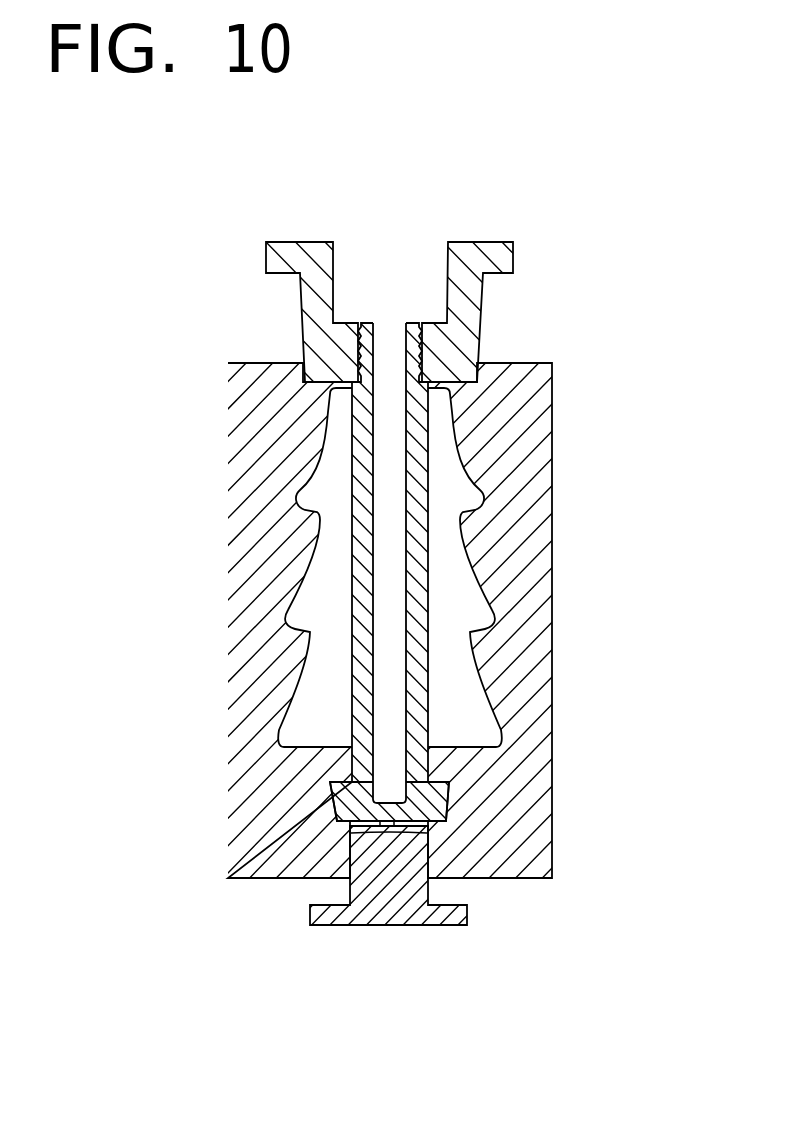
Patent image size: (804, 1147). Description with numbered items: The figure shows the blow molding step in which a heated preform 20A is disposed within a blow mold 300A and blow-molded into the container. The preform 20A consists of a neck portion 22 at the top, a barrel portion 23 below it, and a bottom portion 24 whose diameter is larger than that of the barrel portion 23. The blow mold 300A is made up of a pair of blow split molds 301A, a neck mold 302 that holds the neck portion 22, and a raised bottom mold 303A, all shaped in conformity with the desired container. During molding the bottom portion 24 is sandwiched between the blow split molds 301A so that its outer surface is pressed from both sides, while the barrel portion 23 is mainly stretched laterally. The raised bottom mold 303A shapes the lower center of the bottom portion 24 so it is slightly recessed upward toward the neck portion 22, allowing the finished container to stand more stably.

The blow mold 300A is at (548, 210).
The blow split molds 301A is at (247, 453).
The neck mold 302 is at (472, 323).
The raised bottom mold 303A is at (372, 898).
The preform 20A is at (402, 495).
The neck portion 22 is at (412, 333).
The barrel portion 23 is at (420, 563).
The bottom portion 24 is at (444, 798).